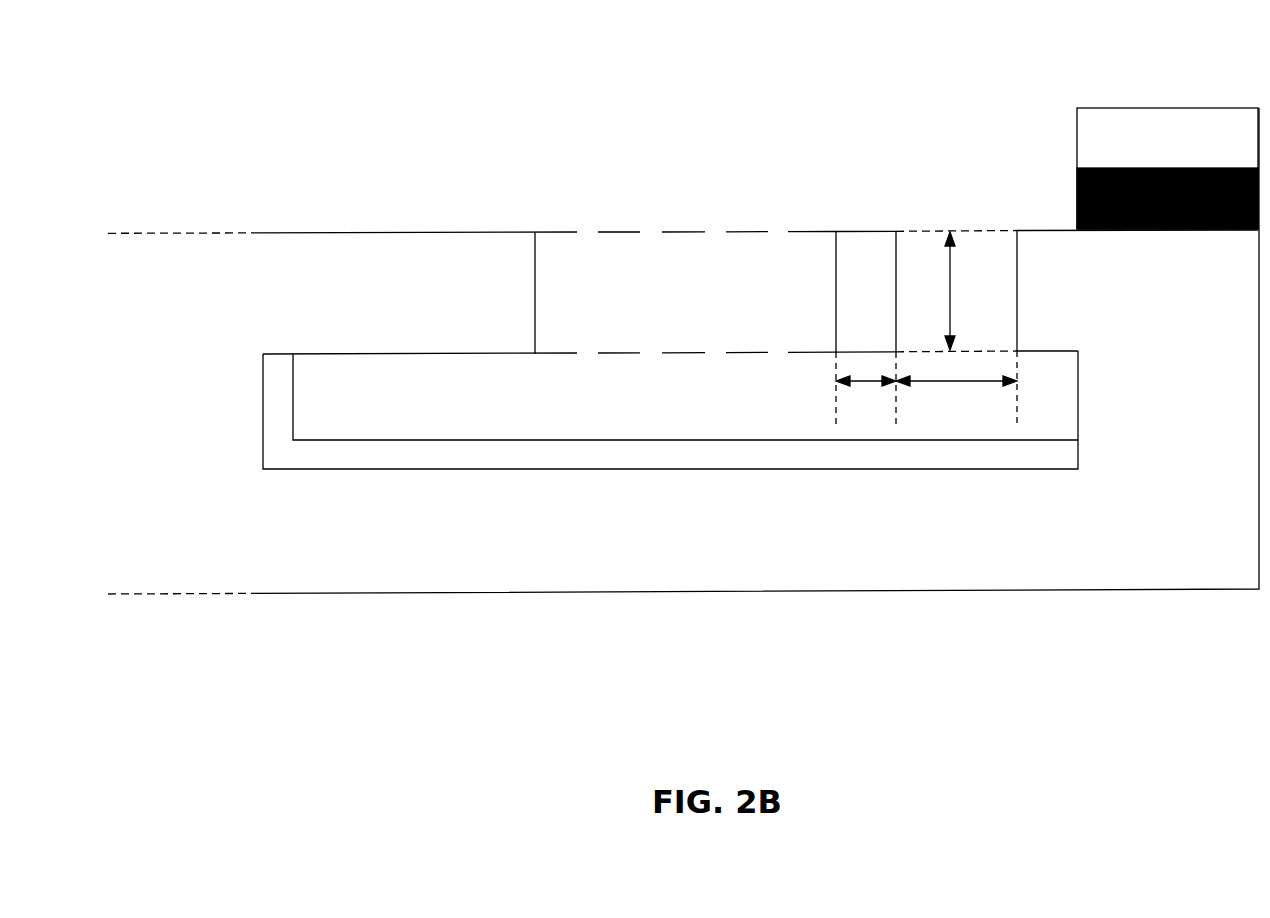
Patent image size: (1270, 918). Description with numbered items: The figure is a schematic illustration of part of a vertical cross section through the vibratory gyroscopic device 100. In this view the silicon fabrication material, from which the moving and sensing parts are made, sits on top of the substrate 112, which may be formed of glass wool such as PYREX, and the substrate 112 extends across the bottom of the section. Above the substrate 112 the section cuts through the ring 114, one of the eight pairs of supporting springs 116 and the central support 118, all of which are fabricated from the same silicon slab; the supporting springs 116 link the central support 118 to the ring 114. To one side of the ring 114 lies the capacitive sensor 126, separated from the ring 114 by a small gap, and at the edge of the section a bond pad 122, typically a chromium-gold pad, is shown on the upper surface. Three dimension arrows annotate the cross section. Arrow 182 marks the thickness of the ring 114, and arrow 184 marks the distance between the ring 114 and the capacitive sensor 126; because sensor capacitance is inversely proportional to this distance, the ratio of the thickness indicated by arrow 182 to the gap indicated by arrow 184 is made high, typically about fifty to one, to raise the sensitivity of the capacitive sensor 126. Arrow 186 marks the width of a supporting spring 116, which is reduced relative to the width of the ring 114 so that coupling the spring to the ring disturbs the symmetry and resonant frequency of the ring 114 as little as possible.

The vibratory gyroscopic device 100 is at (655, 71).
The substrate 112 is at (1108, 589).
The ring 114 is at (852, 231).
The supporting springs 116 is at (682, 232).
The central support 118 is at (383, 232).
The bond pad 122 is at (1157, 108).
The capacitive sensor 126 is at (1023, 231).
The arrow indicating thickness of ring 182 is at (952, 278).
The arrow indicating distance between ring and capacitive sensor 184 is at (968, 382).
The arrow indicating width of spring 186 is at (875, 382).